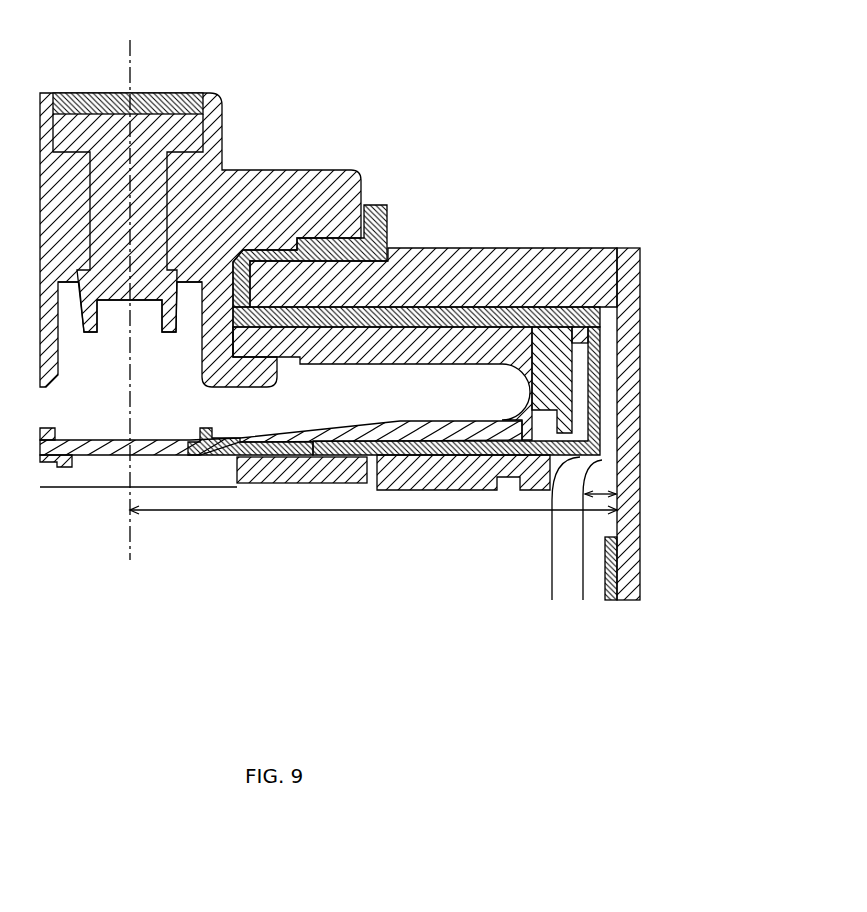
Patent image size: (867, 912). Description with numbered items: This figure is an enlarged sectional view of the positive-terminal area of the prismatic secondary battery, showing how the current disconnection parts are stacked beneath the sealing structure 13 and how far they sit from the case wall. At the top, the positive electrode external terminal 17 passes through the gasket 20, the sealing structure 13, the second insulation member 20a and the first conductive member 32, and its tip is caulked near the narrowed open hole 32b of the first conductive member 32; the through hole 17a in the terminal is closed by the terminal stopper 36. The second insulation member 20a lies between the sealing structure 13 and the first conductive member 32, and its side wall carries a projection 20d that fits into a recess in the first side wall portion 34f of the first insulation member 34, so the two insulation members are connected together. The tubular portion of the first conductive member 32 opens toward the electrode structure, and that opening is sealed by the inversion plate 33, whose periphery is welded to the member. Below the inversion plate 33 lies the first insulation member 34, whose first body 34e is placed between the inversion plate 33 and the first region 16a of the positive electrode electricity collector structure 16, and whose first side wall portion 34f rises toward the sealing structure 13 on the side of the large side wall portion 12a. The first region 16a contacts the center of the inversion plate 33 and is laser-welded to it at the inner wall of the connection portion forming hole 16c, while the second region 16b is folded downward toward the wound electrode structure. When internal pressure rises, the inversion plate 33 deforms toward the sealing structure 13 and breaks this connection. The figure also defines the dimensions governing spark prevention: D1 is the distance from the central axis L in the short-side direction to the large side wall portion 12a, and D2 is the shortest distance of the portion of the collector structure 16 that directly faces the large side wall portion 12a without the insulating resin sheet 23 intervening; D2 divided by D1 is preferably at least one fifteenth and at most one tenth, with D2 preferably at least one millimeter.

The terminal stopper 36 is at (88, 91).
The through hole 17a is at (170, 112).
The positive electrode external terminal 17 is at (320, 168).
The open hole 32b is at (234, 338).
The gasket 20 is at (378, 204).
The first conductive member 32 is at (417, 334).
The second insulation member 20a is at (491, 305).
The sealing structure 13 is at (600, 246).
The first side wall portion 34f is at (600, 341).
The projection 20d is at (604, 372).
The first insulation member 34 is at (603, 417).
The shortest distance D2 is at (606, 483).
The large side wall portion 12a is at (622, 539).
The insulating resin sheet 23 is at (614, 572).
The connection portion forming hole 16c is at (84, 468).
The inversion plate 33 is at (105, 449).
The central axis L is at (128, 314).
The first region 16a is at (272, 486).
The first body 34e is at (315, 458).
The distance D1 is at (373, 523).
The second region 16b is at (551, 578).
The positive electrode electricity collector structure 16 is at (586, 584).